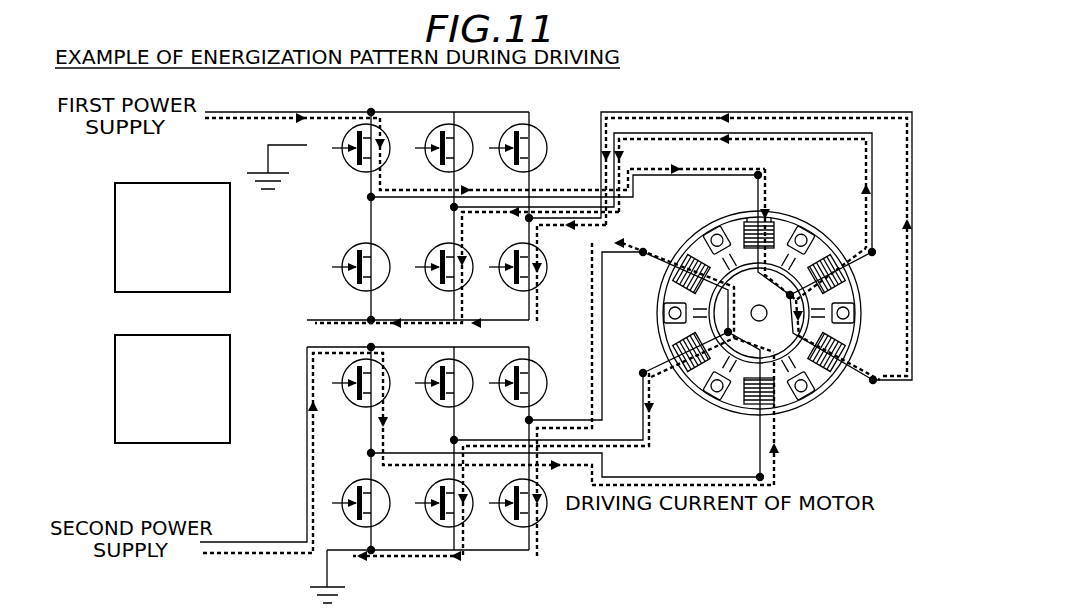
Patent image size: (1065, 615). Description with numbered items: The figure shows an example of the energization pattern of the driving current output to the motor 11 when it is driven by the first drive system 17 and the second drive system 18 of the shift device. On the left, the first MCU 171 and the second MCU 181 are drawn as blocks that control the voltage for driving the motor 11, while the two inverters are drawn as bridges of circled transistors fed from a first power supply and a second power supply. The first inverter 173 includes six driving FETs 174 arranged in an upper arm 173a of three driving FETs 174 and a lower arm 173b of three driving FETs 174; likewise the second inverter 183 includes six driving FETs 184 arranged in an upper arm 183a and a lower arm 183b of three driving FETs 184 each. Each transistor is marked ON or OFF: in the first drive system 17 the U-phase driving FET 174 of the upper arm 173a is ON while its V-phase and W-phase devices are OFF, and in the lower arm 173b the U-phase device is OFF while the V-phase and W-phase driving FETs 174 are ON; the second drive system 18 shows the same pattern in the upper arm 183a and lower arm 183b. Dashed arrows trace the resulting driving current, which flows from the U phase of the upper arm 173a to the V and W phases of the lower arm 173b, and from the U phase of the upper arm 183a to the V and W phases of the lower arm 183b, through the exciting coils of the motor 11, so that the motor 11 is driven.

The motor 11 is at (794, 228).
The first drive system 17 is at (141, 221).
The first MCU 171 is at (130, 183).
The first inverter 173 is at (590, 228).
The upper arm 173a is at (455, 188).
The lower arm 173b is at (536, 285).
The driving FET 174 is at (384, 129).
The second drive system 18 is at (143, 371).
The second MCU 181 is at (132, 331).
The second inverter 183 is at (504, 402).
The upper arm 183a is at (455, 425).
The lower arm 183b is at (538, 519).
The driving FET 184 is at (382, 364).